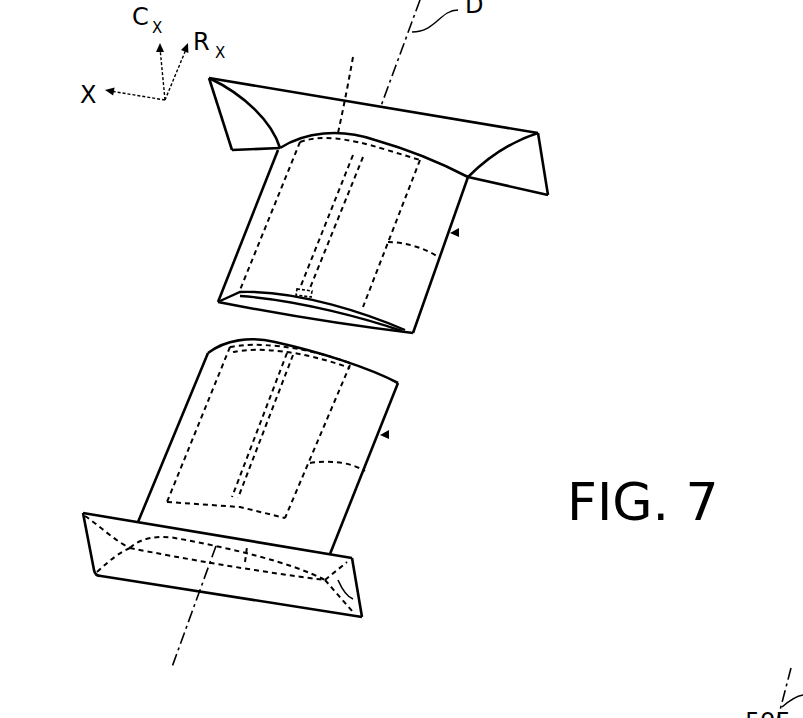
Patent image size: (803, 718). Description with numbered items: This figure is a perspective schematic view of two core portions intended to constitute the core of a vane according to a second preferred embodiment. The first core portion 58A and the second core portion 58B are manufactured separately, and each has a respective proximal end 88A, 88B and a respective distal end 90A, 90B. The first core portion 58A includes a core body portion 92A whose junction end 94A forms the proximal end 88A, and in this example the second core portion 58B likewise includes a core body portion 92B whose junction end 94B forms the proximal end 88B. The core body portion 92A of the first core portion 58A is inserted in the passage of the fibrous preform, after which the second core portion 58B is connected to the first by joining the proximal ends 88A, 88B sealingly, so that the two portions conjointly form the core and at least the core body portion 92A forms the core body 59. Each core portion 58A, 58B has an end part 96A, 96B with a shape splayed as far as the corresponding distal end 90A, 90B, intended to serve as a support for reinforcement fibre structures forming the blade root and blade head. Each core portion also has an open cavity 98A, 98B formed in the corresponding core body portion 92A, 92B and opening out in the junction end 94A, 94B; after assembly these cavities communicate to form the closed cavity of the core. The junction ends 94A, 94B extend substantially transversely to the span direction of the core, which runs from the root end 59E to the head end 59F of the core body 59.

The core body 59 is at (77, 243).
The core body portion 92A is at (219, 300).
The core body portion 92B is at (195, 377).
The first core portion 58A is at (452, 233).
The second core portion 58B is at (382, 435).
The distal end 90A is at (446, 143).
The distal end 90B is at (362, 605).
The end part 96A is at (520, 163).
The end part 96B is at (355, 572).
The open cavity 98A is at (438, 258).
The open cavity 98B is at (363, 473).
The proximal end 88A is at (380, 323).
The junction end 94A is at (372, 318).
The proximal end 88B is at (387, 367).
The junction end 94B is at (375, 365).
The root end 59E is at (346, 83).
The head end 59F is at (245, 562).